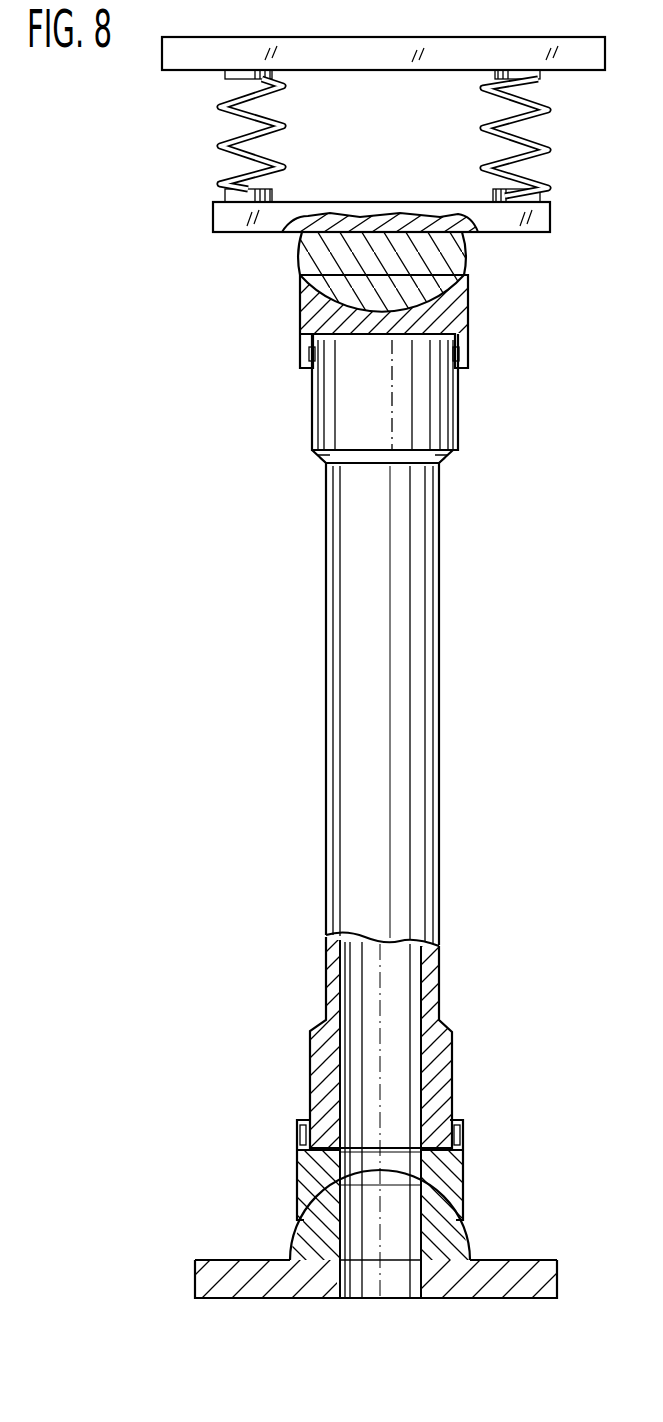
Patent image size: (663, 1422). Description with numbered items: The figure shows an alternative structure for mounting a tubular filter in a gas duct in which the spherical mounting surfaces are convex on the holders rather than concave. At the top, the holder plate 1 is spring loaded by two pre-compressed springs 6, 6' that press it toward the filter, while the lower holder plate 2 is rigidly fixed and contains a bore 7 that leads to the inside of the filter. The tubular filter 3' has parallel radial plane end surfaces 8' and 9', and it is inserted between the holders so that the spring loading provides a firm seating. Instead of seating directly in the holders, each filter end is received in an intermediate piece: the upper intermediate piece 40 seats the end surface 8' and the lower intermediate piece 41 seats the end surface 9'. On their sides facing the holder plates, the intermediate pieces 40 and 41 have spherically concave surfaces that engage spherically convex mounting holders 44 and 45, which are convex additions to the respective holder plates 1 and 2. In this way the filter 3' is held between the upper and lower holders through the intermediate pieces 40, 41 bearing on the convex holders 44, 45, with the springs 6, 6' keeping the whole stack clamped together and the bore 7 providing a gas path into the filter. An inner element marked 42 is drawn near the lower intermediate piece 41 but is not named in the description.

The holder 1 is at (550, 221).
The holder 2 is at (540, 1280).
The filter 3' is at (405, 704).
The spring 6 is at (225, 134).
The spring 6' is at (537, 137).
The bore 7 is at (387, 1283).
The end surface 8' is at (360, 398).
The end surface 9' is at (361, 1042).
The intermediate piece 40 is at (453, 308).
The intermediate piece 41 is at (453, 1178).
The inner bushing 42 is at (353, 1167).
The spherically convex mounting holder 44 is at (317, 255).
The spherically convex mounting holder 45 is at (313, 1245).